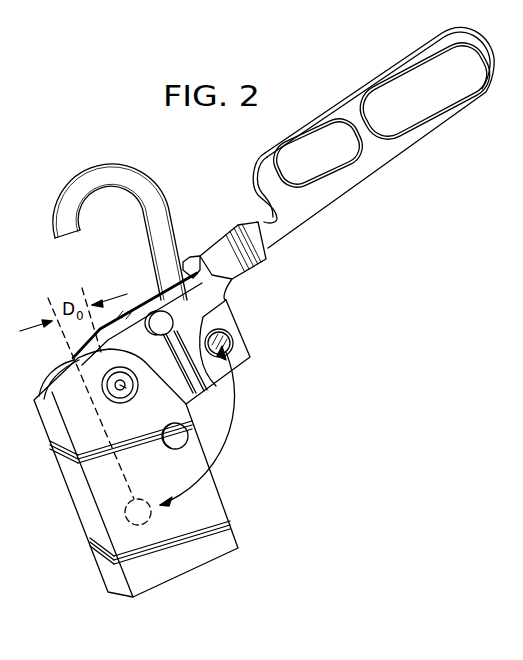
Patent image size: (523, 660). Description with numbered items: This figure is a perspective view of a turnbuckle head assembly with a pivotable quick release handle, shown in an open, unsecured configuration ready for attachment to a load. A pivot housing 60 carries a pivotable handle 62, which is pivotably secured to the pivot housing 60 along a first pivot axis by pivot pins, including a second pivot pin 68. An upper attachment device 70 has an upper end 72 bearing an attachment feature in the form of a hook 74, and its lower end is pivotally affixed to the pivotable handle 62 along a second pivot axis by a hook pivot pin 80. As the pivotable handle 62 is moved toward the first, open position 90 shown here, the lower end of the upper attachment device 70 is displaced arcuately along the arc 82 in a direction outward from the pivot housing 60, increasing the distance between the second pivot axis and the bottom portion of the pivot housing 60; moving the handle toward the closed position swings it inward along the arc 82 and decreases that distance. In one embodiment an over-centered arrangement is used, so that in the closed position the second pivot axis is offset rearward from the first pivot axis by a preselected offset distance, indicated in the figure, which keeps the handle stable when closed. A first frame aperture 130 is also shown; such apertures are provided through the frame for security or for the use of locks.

The pivot housing 60 is at (187, 558).
The pivotable handle 62 is at (288, 237).
The second pivot pin 68 is at (125, 388).
The upper attachment device 70 is at (137, 175).
The upper end 72 is at (92, 168).
The hook 74 is at (105, 190).
The hook pivot pin 80 is at (233, 345).
The arc 82 is at (236, 428).
The first, open position 90 is at (427, 138).
The first frame aperture 130 is at (174, 447).